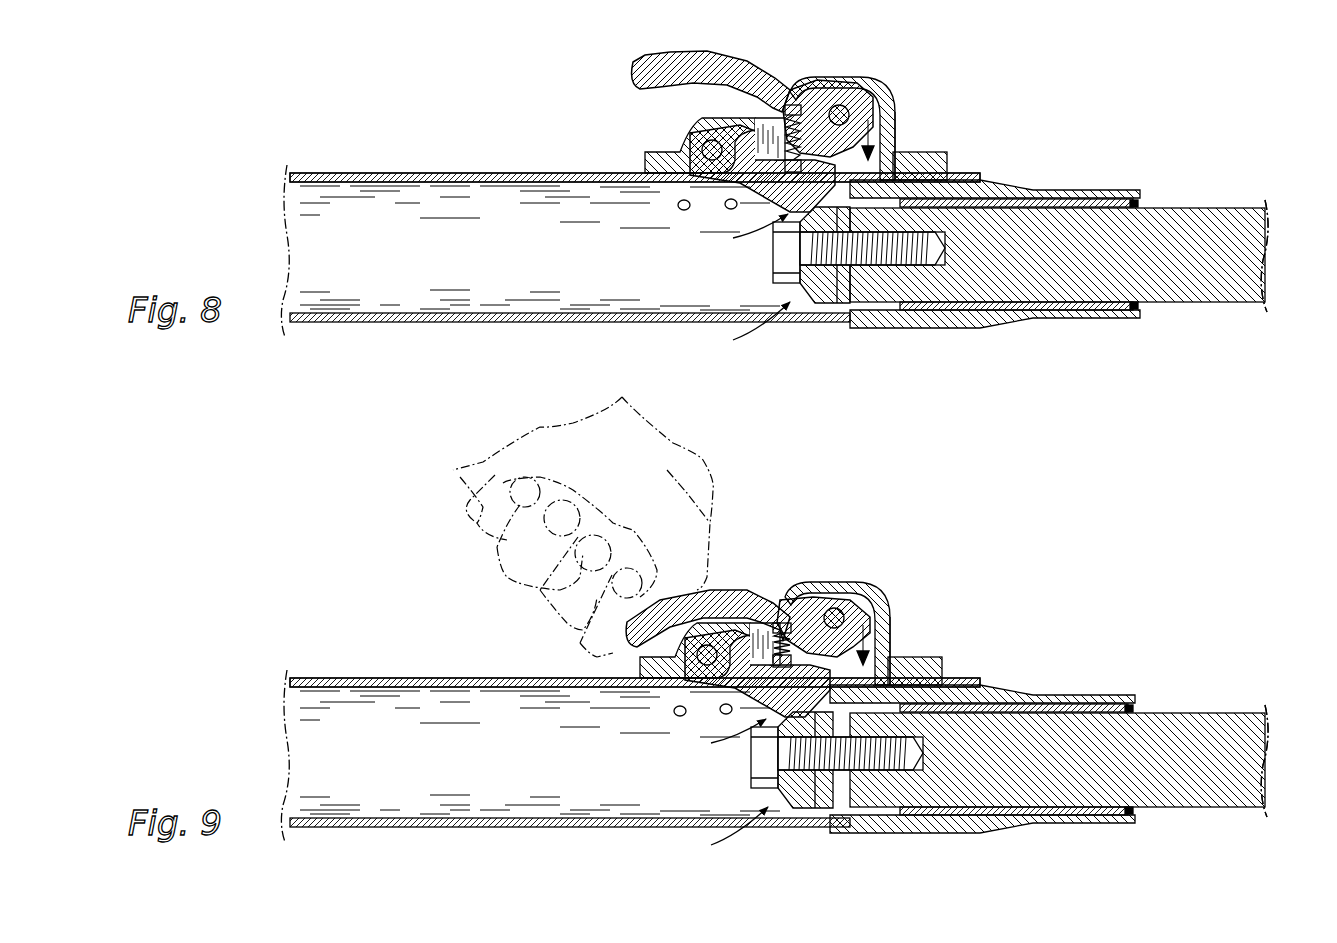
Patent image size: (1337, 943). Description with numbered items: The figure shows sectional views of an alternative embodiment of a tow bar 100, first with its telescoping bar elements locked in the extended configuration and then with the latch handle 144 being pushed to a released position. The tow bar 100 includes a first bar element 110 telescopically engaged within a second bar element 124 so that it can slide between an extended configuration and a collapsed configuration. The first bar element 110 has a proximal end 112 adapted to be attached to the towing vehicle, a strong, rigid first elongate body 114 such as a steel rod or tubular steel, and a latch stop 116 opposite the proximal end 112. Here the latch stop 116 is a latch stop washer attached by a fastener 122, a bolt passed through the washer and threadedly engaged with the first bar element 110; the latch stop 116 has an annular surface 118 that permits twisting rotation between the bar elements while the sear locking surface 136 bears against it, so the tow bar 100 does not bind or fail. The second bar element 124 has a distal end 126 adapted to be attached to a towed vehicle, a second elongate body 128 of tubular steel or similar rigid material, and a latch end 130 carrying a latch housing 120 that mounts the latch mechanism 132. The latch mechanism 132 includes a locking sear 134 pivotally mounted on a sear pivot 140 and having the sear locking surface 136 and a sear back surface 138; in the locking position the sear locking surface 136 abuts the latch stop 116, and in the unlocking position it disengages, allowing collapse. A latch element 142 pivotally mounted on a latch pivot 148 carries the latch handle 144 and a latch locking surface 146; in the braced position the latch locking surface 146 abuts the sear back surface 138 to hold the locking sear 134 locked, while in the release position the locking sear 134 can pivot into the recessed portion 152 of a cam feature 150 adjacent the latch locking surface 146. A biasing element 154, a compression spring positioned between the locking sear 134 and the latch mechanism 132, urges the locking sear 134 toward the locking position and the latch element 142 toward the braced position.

In FIG. 8, the tow bar 100 is at (490, 92).
In FIG. 9, the tow bar 100 is at (421, 561).
In FIG. 8, the first bar element 110 is at (1185, 208).
In FIG. 9, the first bar element 110 is at (1059, 738).
In FIG. 8, the proximal end 112 is at (1267, 222).
In FIG. 9, the proximal end 112 is at (1291, 758).
In FIG. 8, the first elongate body 114 is at (1185, 208).
In FIG. 9, the first elongate body 114 is at (1185, 698).
In FIG. 8, the latch stop 116 is at (815, 300).
In FIG. 9, the latch stop 116 is at (841, 790).
In FIG. 8, the annular surface 118 is at (739, 283).
In FIG. 9, the annular surface 118 is at (717, 788).
In FIG. 8, the latch housing 120 is at (882, 90).
In FIG. 9, the latch housing 120 is at (869, 627).
In FIG. 8, the fastener 122 is at (773, 256).
In FIG. 9, the fastener 122 is at (802, 757).
In FIG. 8, the second bar element 124 is at (410, 173).
In FIG. 9, the second bar element 124 is at (630, 731).
In FIG. 8, the distal end 126 is at (312, 173).
In FIG. 9, the distal end 126 is at (632, 654).
In FIG. 8, the second elongate body 128 is at (410, 173).
In FIG. 9, the second elongate body 128 is at (401, 661).
In FIG. 8, the latch end 130 is at (930, 328).
In FIG. 9, the latch end 130 is at (982, 776).
In FIG. 8, the latch mechanism 132 is at (888, 62).
In FIG. 9, the latch mechanism 132 is at (926, 605).
In FIG. 8, the locking sear 134 is at (767, 199).
In FIG. 9, the locking sear 134 is at (680, 732).
In FIG. 8, the sear locking surface 136 is at (793, 198).
In FIG. 9, the sear locking surface 136 is at (858, 688).
In FIG. 8, the sear back surface 138 is at (838, 130).
In FIG. 9, the sear back surface 138 is at (823, 601).
In FIG. 8, the sear pivot 140 is at (645, 165).
In FIG. 9, the sear pivot 140 is at (637, 650).
In FIG. 8, the latch element 142 is at (790, 84).
In FIG. 9, the latch element 142 is at (757, 608).
In FIG. 8, the latch handle 144 is at (645, 63).
In FIG. 9, the latch handle 144 is at (708, 582).
In FIG. 8, the latch locking surface 146 is at (872, 148).
In FIG. 9, the latch locking surface 146 is at (895, 635).
In FIG. 8, the latch pivot 148 is at (850, 105).
In FIG. 9, the latch pivot 148 is at (855, 581).
In FIG. 8, the cam feature 150 is at (900, 156).
In FIG. 9, the cam feature 150 is at (940, 662).
In FIG. 8, the recessed portion 152 is at (760, 118).
In FIG. 9, the recessed portion 152 is at (765, 644).
In FIG. 8, the biasing element 154 is at (790, 104).
In FIG. 9, the biasing element 154 is at (793, 596).